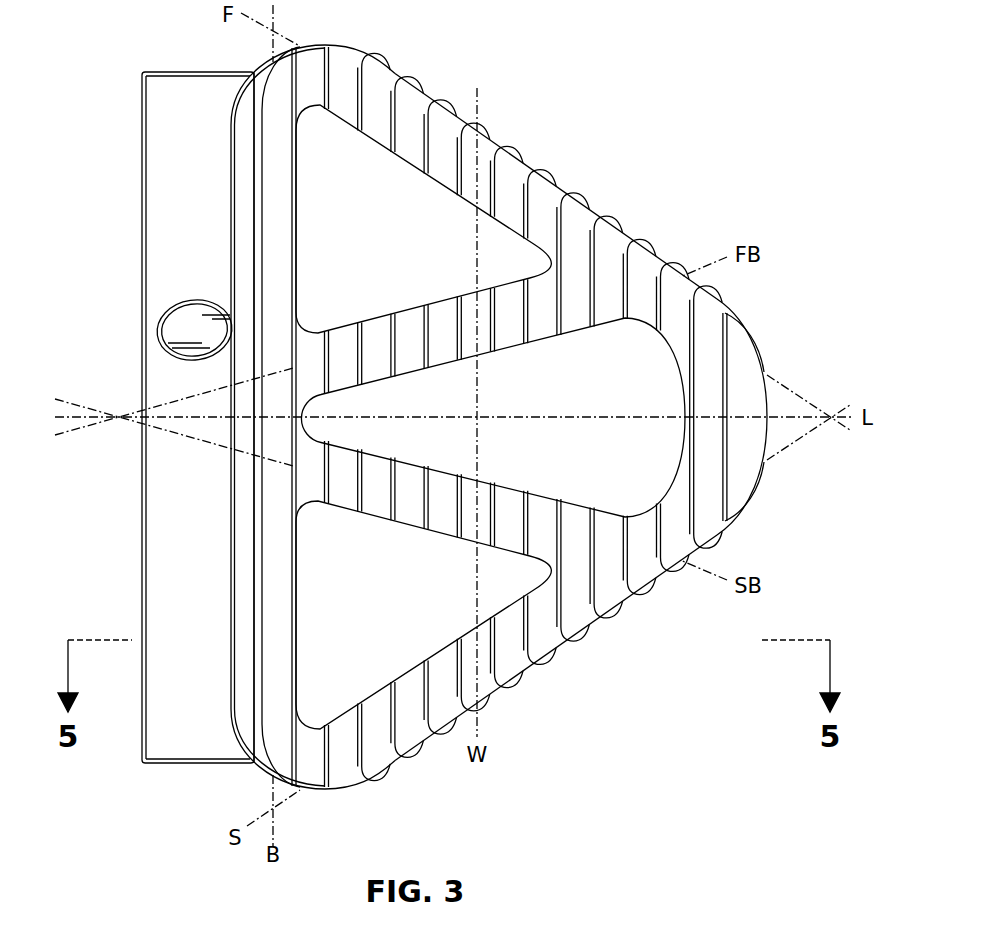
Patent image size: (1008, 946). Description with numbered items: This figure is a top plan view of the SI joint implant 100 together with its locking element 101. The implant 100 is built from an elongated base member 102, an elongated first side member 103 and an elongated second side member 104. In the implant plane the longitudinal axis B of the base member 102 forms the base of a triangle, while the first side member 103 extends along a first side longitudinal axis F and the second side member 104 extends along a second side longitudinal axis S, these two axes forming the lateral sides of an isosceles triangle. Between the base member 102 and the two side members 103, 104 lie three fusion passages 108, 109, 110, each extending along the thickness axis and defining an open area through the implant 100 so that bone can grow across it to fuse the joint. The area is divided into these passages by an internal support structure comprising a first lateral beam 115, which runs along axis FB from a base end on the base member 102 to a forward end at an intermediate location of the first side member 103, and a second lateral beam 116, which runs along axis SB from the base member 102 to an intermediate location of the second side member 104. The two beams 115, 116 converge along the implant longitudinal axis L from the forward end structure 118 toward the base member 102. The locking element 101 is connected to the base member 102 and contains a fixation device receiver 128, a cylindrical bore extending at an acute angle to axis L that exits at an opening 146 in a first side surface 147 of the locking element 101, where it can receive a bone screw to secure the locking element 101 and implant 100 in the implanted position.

The SI joint implant 100 is at (612, 193).
The locking element 101 is at (166, 58).
The elongated base member 102 is at (247, 552).
The elongated first side member 103 is at (403, 78).
The elongated second side member 104 is at (398, 763).
The fusion passage 108 is at (354, 243).
The fusion passage 109 is at (556, 403).
The fusion passage 110 is at (354, 616).
The first lateral beam 115 is at (497, 290).
The second lateral beam 116 is at (497, 545).
The forward end structure 118 is at (780, 374).
The fixation device receiver 128 is at (186, 314).
The opening 146 is at (157, 328).
The first side surface 147 is at (171, 243).